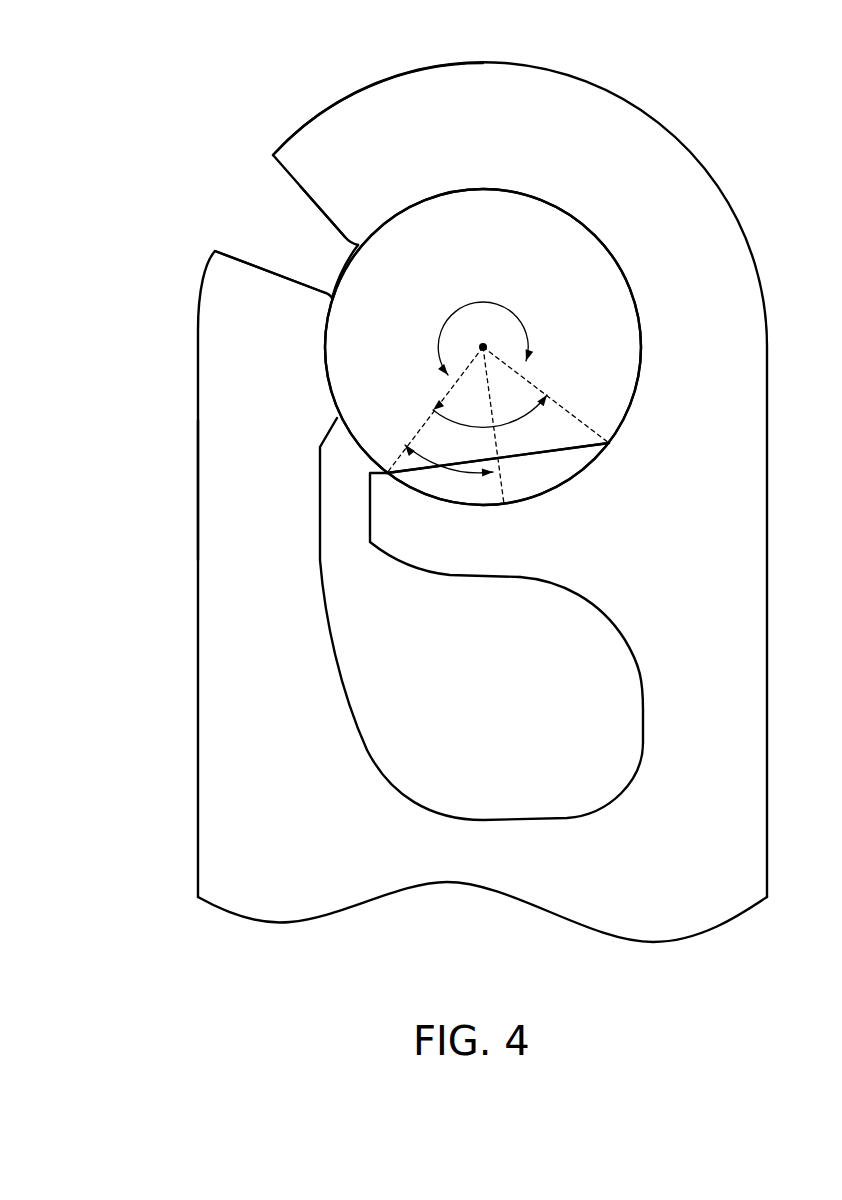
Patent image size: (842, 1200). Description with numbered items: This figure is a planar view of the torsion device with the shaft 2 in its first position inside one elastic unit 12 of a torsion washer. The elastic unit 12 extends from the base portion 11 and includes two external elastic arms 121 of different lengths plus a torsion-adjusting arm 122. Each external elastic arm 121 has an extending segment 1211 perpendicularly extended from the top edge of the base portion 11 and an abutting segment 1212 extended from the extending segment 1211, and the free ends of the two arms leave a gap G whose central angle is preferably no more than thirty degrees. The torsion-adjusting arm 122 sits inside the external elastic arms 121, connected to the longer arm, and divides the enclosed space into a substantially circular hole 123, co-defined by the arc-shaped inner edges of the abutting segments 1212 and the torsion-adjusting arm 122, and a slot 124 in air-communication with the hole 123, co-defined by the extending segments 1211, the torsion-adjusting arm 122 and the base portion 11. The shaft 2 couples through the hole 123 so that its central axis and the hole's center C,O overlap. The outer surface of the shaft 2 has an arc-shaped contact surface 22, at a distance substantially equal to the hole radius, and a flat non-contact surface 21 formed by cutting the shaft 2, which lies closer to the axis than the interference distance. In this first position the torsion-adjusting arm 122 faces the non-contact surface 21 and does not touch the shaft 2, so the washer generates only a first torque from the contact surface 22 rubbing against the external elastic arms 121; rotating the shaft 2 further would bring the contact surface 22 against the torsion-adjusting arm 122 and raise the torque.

The elastic unit 12 is at (328, 87).
The external elastic arm 121 is at (105, 372).
The abutting segment 1212 is at (385, 132).
The extending segment 1211 is at (247, 474).
The gap G is at (282, 206).
The hole 123 is at (640, 294).
The shaft 2 is at (604, 383).
The non-contact surface 21 is at (547, 455).
The contact surface 22 is at (340, 267).
The torsion-adjusting arm 122 is at (427, 535).
The slot 124 is at (598, 715).
The base portion 11 is at (500, 857).
The central axis and center C,O is at (483, 347).